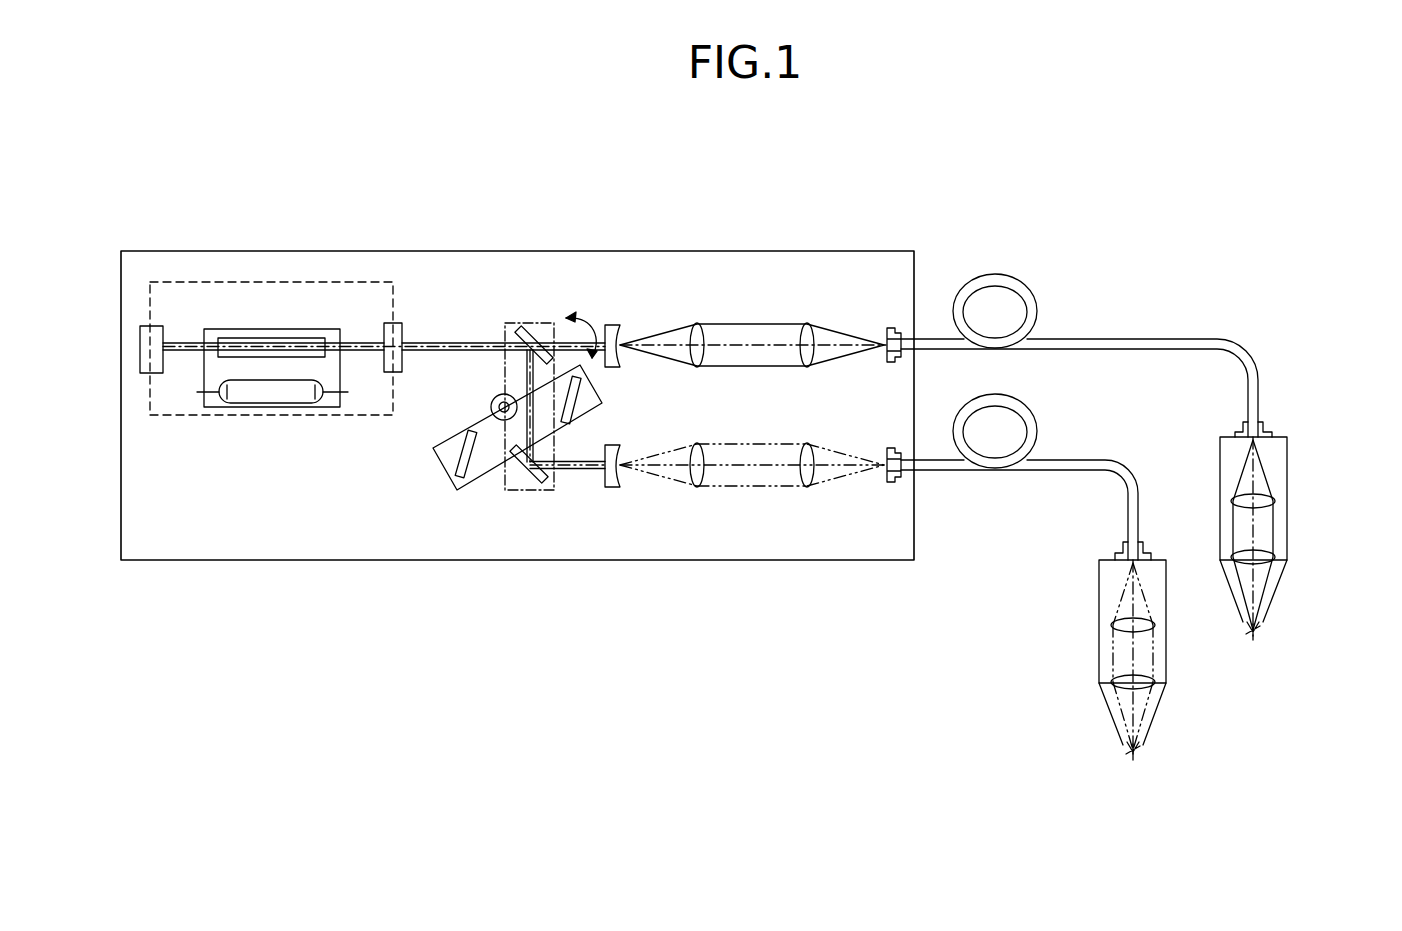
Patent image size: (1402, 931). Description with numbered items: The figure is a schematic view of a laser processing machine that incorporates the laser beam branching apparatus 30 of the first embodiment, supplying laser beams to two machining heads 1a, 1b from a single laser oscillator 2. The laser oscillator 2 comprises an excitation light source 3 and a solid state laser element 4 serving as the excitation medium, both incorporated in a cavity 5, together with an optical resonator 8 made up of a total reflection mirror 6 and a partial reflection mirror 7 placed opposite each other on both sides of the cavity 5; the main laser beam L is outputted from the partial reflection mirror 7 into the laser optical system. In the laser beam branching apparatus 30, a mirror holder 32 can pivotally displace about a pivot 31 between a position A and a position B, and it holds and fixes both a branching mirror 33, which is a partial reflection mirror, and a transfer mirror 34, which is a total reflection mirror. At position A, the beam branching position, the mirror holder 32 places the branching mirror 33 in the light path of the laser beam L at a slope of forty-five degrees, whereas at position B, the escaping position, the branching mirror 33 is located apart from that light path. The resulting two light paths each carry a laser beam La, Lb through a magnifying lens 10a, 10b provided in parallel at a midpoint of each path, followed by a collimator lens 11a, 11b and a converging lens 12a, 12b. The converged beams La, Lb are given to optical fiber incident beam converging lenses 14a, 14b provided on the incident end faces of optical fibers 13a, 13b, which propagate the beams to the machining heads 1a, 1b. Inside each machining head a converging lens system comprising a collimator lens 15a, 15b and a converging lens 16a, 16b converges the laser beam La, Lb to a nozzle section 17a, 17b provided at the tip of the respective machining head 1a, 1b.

The machining head 1a is at (1296, 470).
The machining head 1b is at (1094, 578).
The laser oscillator 2 is at (464, 250).
The excitation light source 3 is at (257, 404).
The solid state laser element 4 is at (244, 343).
The cavity 5 is at (340, 370).
The total reflection mirror 6 is at (156, 338).
The partial reflection mirror 7 is at (402, 333).
The optical resonator 8 is at (190, 425).
The magnifying lens 10a is at (618, 340).
The magnifying lens 10b is at (618, 474).
The collimator lens 11a is at (698, 338).
The collimator lens 11b is at (699, 475).
The converging lens 12a is at (810, 338).
The converging lens 12b is at (810, 475).
The optical fiber 13a is at (1088, 339).
The optical fiber 13b is at (1073, 460).
The optical fiber incident beam converging lens 14a is at (886, 340).
The optical fiber incident beam converging lens 14b is at (885, 458).
The collimator lens 15a is at (1260, 505).
The collimator lens 15b is at (1122, 621).
The converging lens 16a is at (1260, 562).
The converging lens 16b is at (1122, 680).
The nozzle section 17a is at (1260, 620).
The nozzle section 17b is at (1129, 740).
The laser beam branching apparatus 30 is at (461, 416).
The pivot 31 is at (499, 401).
The mirror holder 32 is at (448, 455).
The branching mirror 33 is at (580, 400).
The transfer mirror 34 is at (450, 464).
The laser beam L is at (460, 343).
The laser beam La is at (558, 342).
The laser beam Lb is at (573, 471).
The position A is at (528, 390).
The position B is at (620, 390).